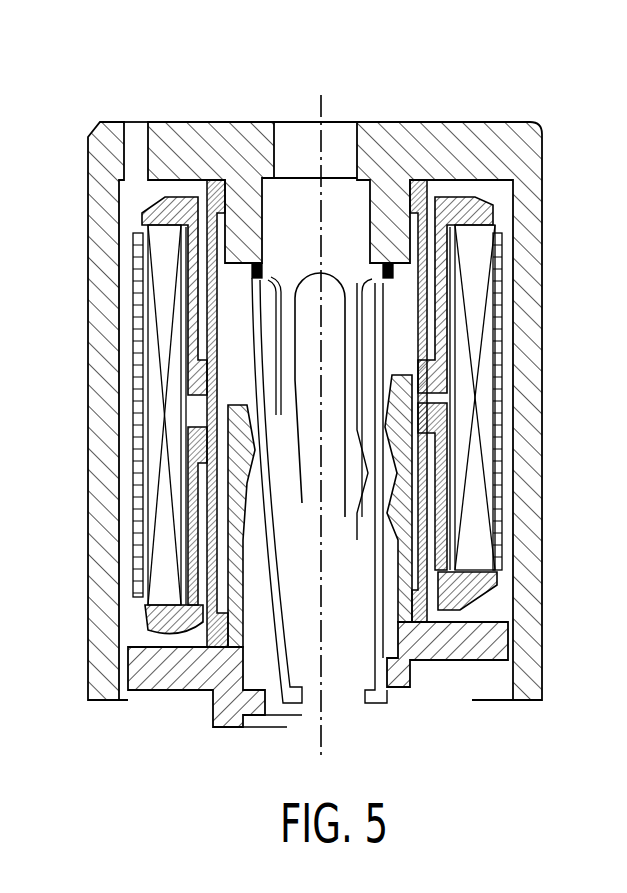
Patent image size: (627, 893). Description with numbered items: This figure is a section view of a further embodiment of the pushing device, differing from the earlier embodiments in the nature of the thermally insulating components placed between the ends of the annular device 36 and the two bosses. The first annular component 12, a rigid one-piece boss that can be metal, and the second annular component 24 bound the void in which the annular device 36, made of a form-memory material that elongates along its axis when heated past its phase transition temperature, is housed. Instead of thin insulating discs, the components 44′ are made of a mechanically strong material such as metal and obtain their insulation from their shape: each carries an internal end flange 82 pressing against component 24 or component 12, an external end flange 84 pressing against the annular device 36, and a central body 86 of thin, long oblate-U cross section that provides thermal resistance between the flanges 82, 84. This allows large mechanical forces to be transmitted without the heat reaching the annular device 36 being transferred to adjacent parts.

The first annular component 12 is at (458, 118).
The internal end flange 82 is at (401, 183).
The external end flange 84 is at (470, 207).
The central body 86 is at (440, 323).
The annular device 36 is at (478, 497).
The second annular component 24 is at (460, 650).
The thermally insulating component 44′ is at (146, 207).